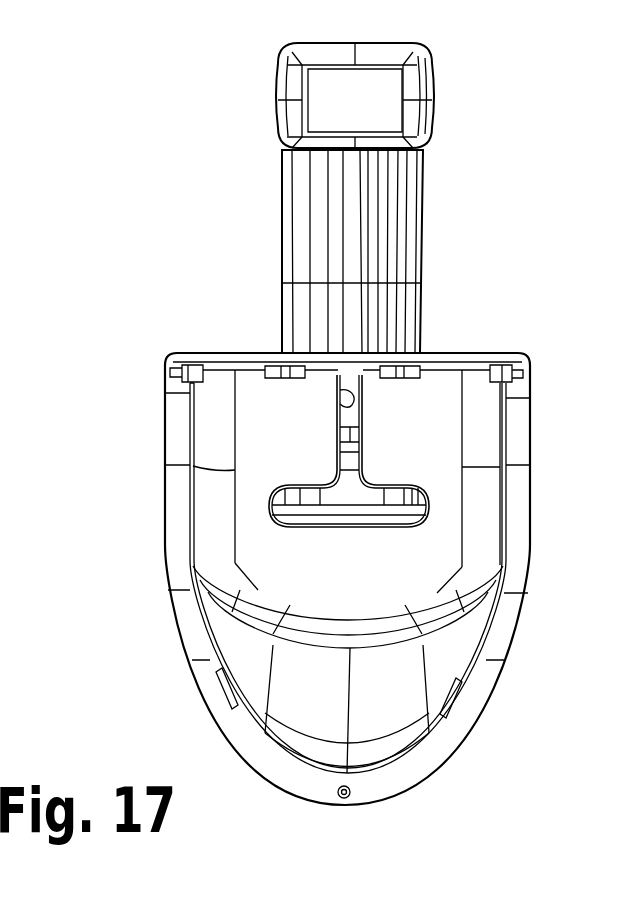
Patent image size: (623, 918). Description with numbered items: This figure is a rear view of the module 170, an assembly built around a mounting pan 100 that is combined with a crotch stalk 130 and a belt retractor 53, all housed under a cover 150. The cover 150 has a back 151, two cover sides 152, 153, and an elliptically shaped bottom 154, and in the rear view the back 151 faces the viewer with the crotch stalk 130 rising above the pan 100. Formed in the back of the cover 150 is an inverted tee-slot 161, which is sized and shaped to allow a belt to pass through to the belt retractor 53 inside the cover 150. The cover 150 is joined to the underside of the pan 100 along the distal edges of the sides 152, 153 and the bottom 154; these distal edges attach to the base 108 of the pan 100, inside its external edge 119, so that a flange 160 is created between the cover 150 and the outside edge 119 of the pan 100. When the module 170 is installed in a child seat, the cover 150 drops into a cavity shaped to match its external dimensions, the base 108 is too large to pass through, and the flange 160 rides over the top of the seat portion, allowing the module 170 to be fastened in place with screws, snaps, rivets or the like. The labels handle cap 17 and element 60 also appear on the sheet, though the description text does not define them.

The shovel assembly 170 is at (208, 178).
The handle grip 17 is at (432, 78).
The handle shaft 130 is at (420, 209).
The blade head 100 is at (377, 579).
The outer rim 119 is at (530, 555).
The side wall 160 is at (170, 418).
The left wall 152 is at (185, 490).
The right wall 153 is at (512, 483).
The rail 108 is at (518, 424).
The floor panel 151 is at (440, 428).
The curved floor 150 is at (300, 572).
The lower floor 154 is at (398, 693).
The T-shaped slot 53 is at (358, 490).
The hook 161 is at (365, 396).
The element 60 is at (7, 373).